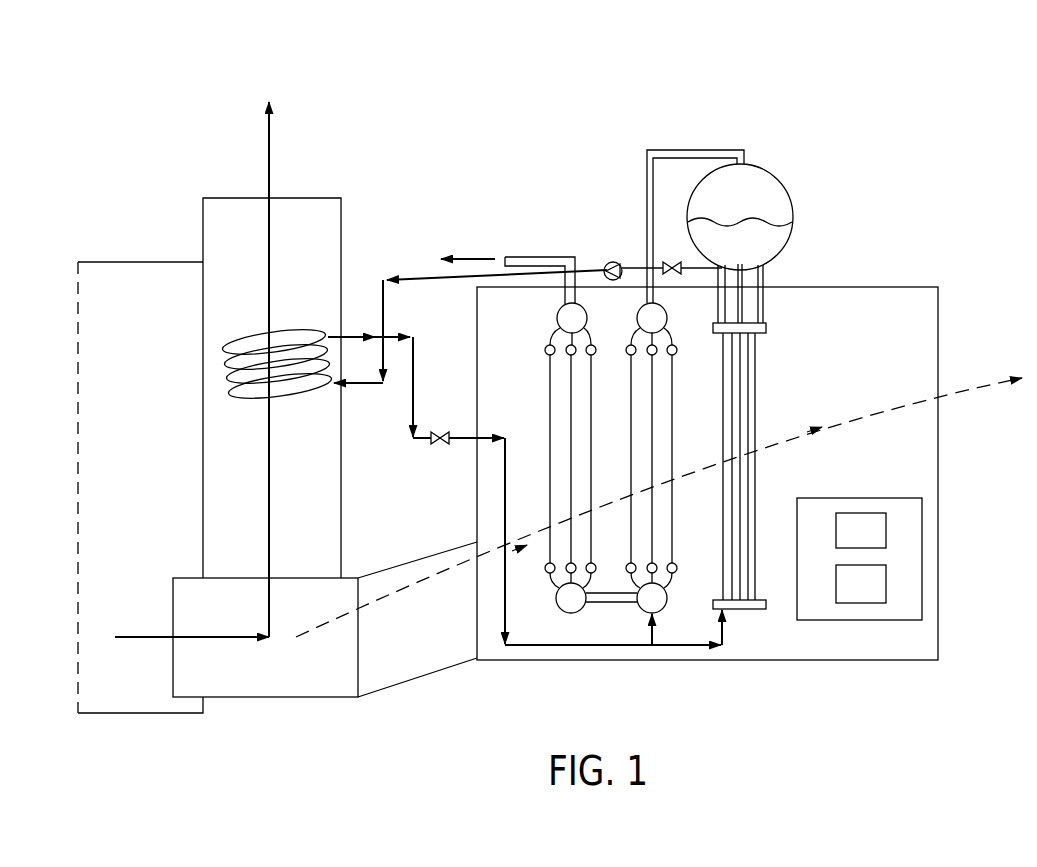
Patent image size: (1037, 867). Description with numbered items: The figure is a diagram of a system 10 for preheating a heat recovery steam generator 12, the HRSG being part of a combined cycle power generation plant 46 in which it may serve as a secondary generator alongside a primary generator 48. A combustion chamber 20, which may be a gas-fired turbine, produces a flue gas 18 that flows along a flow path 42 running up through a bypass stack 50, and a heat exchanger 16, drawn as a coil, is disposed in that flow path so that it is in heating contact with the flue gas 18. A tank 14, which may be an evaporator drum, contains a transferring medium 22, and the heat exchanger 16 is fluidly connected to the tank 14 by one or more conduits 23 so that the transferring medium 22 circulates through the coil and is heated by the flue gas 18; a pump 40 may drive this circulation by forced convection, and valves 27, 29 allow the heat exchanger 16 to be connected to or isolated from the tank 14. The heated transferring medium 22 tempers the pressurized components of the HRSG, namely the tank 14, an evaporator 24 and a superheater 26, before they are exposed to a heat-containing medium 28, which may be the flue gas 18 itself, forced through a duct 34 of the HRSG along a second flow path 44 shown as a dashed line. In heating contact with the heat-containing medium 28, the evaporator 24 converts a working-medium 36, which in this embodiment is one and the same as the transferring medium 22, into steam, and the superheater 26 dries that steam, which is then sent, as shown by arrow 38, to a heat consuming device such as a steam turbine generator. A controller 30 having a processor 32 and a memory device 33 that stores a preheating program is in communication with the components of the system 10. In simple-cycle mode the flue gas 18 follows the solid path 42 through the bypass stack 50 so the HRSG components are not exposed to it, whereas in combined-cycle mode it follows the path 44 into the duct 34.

The system 10 is at (125, 75).
The heat recovery steam generator 12 is at (865, 160).
The tank 14 is at (785, 183).
The heat exchanger 16 is at (223, 352).
The flue gas 18 is at (127, 635).
The combustion chamber 20 is at (101, 262).
The transferring medium 22 is at (770, 251).
The conduits 23 is at (388, 337).
The evaporator 24 is at (773, 397).
The superheater 26 is at (537, 358).
The valve 27 is at (665, 262).
The heat-containing medium 28 is at (707, 470).
The valve 29 is at (440, 432).
The controller 30 is at (837, 498).
The processor 32 is at (875, 541).
The memory device 33 is at (875, 596).
The duct 34 is at (410, 560).
The working-medium 36 is at (740, 222).
The arrow 38 is at (480, 255).
The pump 40 is at (612, 261).
The flow path 42 is at (270, 180).
The flow path 44 is at (417, 588).
The combined cycle power generation plant 46 is at (188, 138).
The primary generator 48 is at (130, 160).
The bypass stack 50 is at (222, 246).